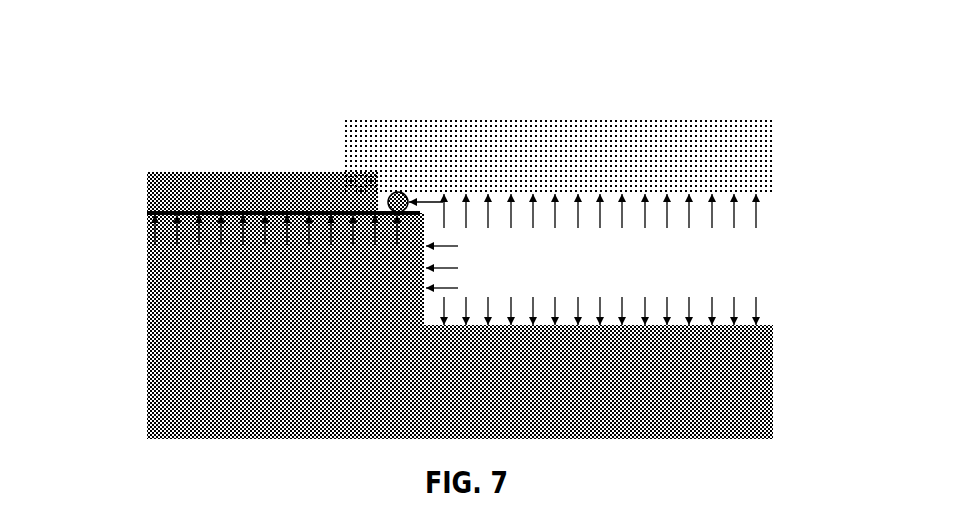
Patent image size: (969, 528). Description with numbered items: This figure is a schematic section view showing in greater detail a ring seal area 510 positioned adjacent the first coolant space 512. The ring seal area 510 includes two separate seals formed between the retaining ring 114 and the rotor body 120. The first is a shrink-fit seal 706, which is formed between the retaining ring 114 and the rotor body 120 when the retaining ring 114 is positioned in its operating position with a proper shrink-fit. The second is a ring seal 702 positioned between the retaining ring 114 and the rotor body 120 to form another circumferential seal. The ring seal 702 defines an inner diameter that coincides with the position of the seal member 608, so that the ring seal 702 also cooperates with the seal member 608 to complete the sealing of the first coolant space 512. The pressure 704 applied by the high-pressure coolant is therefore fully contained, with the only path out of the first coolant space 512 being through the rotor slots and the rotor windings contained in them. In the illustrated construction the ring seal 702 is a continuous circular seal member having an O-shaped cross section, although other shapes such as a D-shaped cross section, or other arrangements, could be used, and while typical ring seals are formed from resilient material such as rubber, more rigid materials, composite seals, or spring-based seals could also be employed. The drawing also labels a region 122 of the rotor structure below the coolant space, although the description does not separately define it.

The retaining ring 114 is at (707, 134).
The rotor body 120 is at (252, 301).
The substrate base 122 is at (735, 388).
The ring seal area 510 is at (320, 155).
The first coolant space 512 is at (606, 275).
The seal member 608 is at (233, 212).
The ring seal 702 is at (397, 193).
The pressure 704 is at (647, 220).
The shrink-fit seal 706 is at (366, 177).